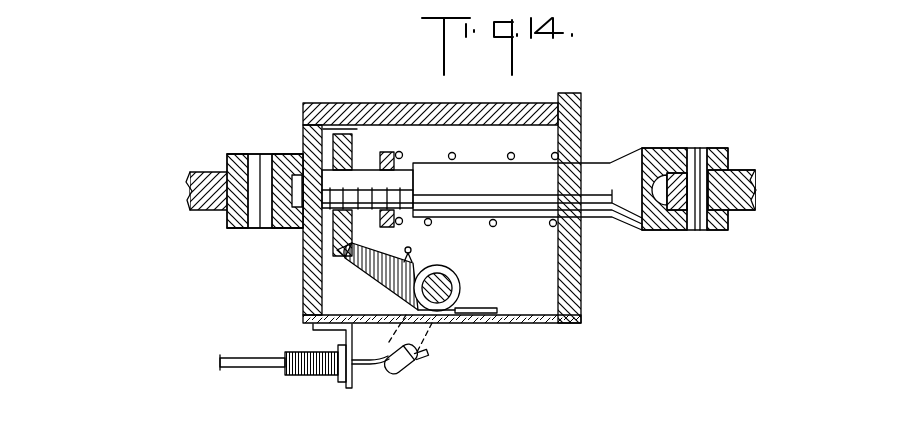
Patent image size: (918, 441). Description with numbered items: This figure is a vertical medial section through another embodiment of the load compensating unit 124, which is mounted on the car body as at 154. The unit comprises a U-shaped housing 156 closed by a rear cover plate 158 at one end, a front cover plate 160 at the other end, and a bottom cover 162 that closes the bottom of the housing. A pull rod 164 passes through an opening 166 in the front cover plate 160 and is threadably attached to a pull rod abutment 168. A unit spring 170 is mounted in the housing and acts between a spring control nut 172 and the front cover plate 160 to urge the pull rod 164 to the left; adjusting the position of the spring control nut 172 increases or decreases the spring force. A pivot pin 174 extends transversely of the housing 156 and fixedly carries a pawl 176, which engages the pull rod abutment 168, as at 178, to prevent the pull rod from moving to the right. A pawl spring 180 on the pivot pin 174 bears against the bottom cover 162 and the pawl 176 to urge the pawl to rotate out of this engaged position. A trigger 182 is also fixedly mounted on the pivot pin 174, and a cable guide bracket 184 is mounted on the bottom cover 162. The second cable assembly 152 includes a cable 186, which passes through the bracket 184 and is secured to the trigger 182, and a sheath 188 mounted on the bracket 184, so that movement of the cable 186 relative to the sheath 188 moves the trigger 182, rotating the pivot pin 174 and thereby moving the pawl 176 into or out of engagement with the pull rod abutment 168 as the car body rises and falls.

The load compensating unit 124 is at (619, 104).
The second cable assembly 152 is at (270, 386).
The mounting on the car body 154 is at (248, 152).
The U-shaped housing 156 is at (345, 104).
The rear cover plate 158 is at (306, 262).
The front cover plate 160 is at (568, 288).
The bottom cover 162 is at (523, 318).
The pull rod 164 is at (598, 168).
The opening 166 is at (580, 230).
The pull rod abutment 168 is at (357, 132).
The unit spring 170 is at (463, 152).
The spring control nut 172 is at (387, 150).
The pivot pin 174 is at (460, 280).
The pawl 176 is at (390, 280).
The engagement point 178 is at (347, 255).
The pawl spring 180 is at (415, 262).
The trigger 182 is at (397, 383).
The cable guide bracket 184 is at (343, 340).
The cable 186 is at (370, 363).
The sheath 188 is at (318, 372).